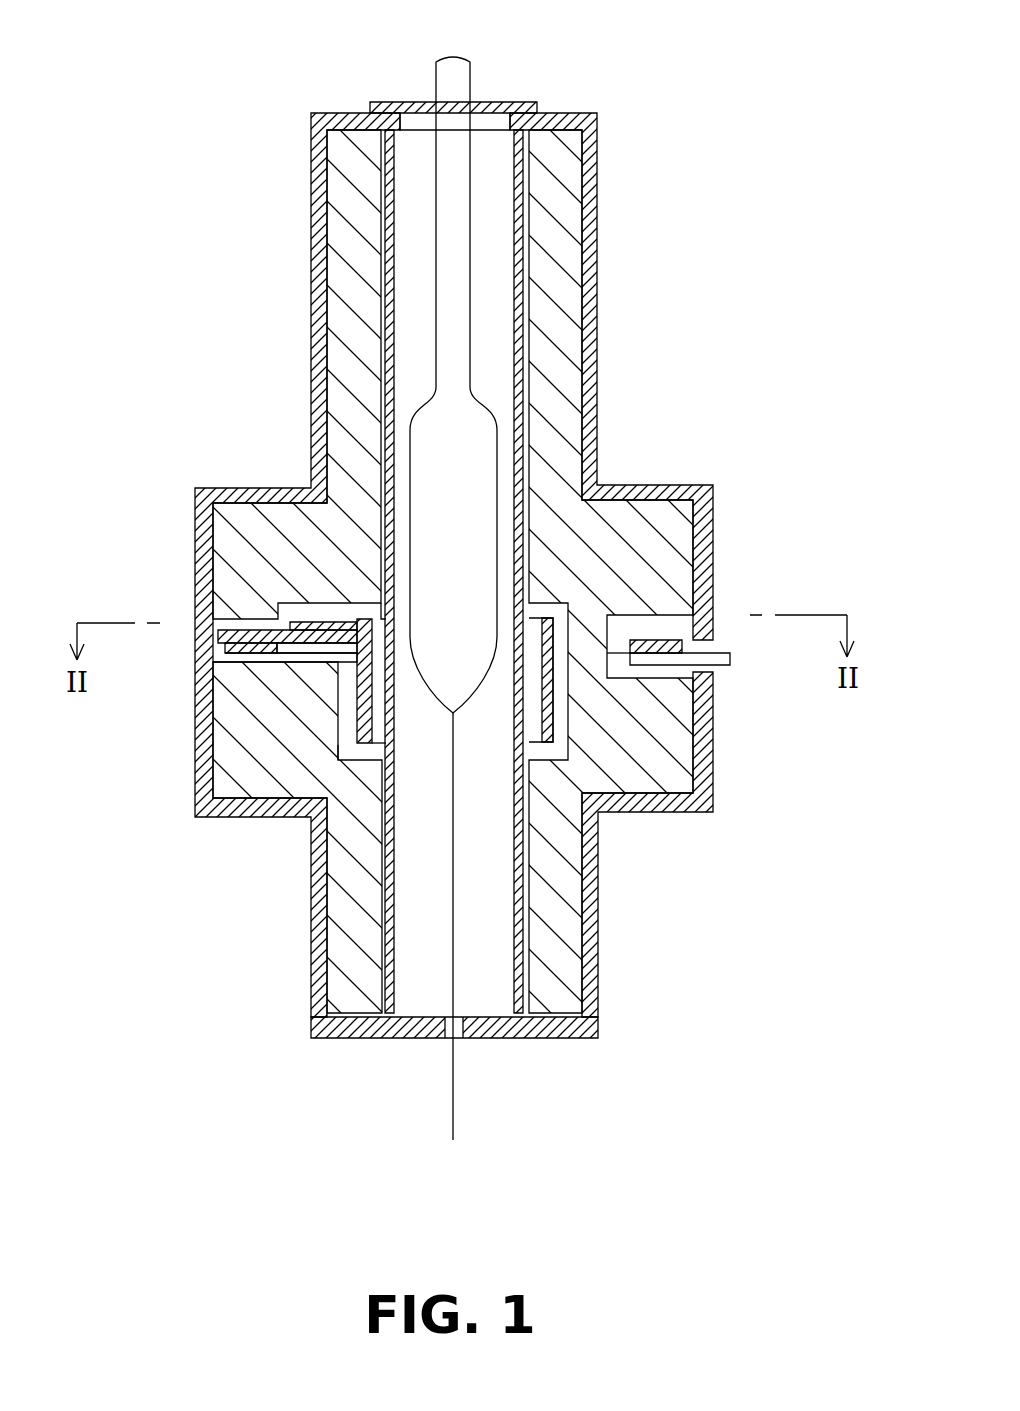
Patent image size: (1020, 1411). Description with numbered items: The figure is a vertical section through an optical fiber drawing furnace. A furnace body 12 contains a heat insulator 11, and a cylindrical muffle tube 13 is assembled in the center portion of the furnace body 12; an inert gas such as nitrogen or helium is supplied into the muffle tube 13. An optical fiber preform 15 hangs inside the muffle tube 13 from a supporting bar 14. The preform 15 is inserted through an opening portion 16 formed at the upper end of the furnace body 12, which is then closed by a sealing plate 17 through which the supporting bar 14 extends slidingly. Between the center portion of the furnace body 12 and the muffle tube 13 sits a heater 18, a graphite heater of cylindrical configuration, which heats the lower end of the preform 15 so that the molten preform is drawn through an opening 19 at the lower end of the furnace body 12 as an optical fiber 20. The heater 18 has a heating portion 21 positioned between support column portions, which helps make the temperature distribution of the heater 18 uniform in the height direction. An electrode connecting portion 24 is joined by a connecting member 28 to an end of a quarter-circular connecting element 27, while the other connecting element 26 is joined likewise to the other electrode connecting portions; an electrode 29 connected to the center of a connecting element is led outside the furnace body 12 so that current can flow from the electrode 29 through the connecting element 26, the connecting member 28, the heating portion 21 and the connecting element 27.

The heat insulator 11 is at (643, 532).
The furnace body 12 is at (708, 528).
The muffle tube 13 is at (522, 330).
The supporting bar 14 is at (461, 73).
The optical fiber preform 15 is at (432, 437).
The opening portion 16 is at (411, 120).
The sealing plate 17 is at (526, 108).
The heater 18 is at (335, 770).
The opening 19 is at (444, 1037).
The optical fiber 20 is at (455, 1112).
The heating portion 21 is at (553, 718).
The electrode connecting portion 24 is at (313, 603).
The connecting element 26 is at (663, 642).
The connecting element 27 is at (247, 655).
The connecting member 28 is at (258, 632).
The electrode 29 is at (730, 665).